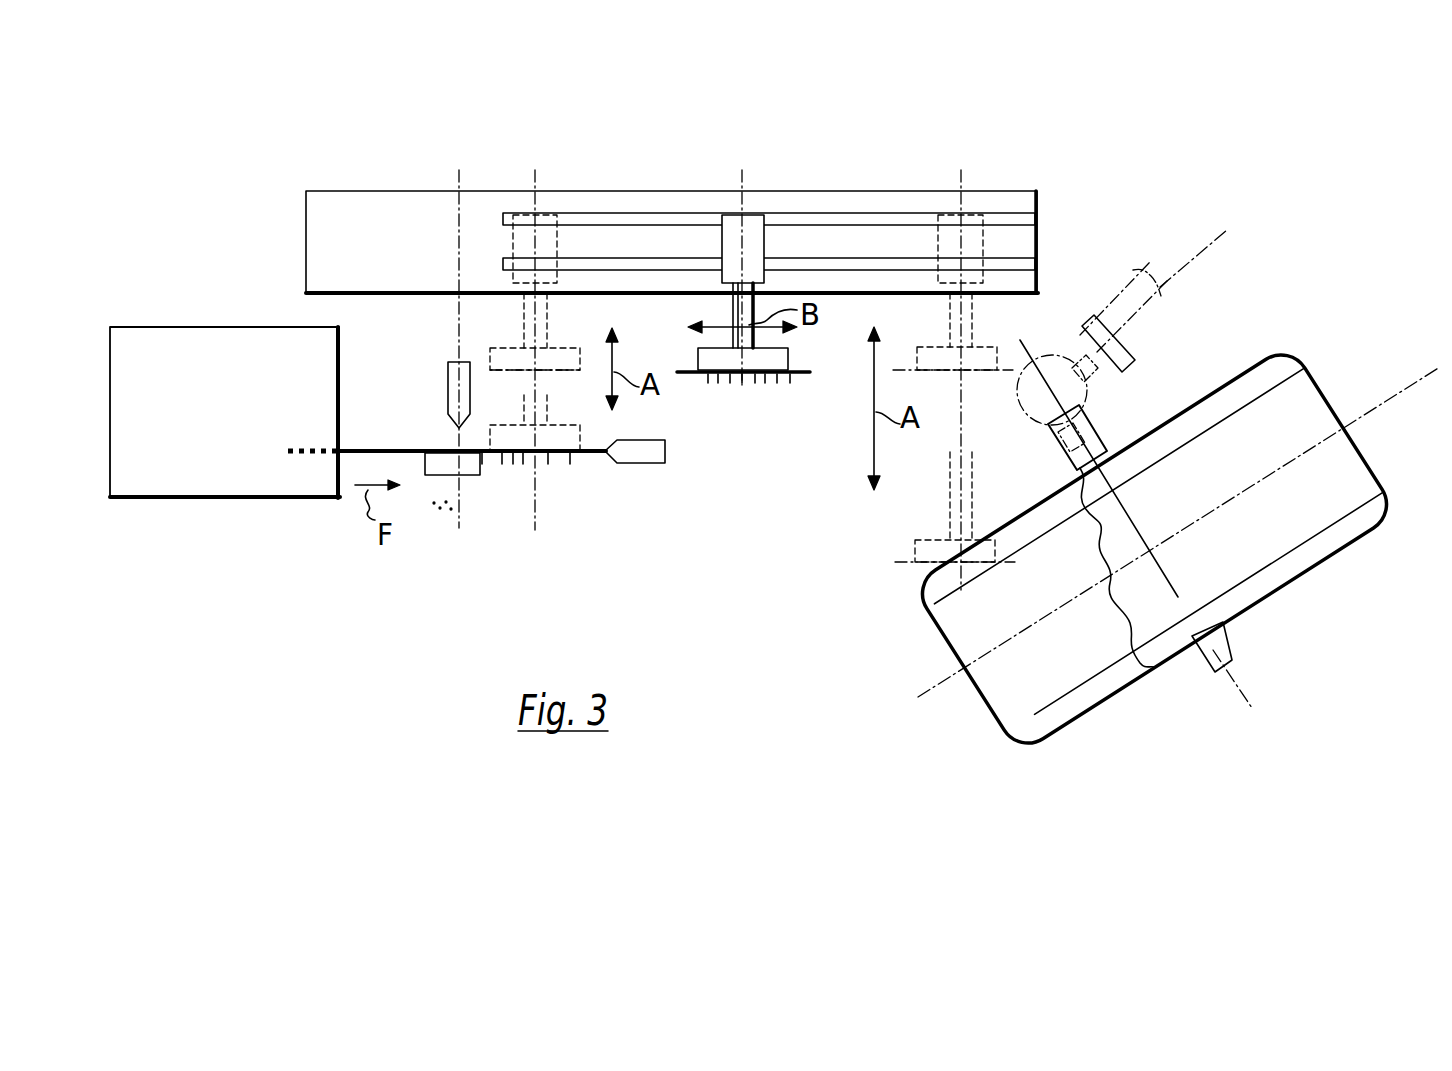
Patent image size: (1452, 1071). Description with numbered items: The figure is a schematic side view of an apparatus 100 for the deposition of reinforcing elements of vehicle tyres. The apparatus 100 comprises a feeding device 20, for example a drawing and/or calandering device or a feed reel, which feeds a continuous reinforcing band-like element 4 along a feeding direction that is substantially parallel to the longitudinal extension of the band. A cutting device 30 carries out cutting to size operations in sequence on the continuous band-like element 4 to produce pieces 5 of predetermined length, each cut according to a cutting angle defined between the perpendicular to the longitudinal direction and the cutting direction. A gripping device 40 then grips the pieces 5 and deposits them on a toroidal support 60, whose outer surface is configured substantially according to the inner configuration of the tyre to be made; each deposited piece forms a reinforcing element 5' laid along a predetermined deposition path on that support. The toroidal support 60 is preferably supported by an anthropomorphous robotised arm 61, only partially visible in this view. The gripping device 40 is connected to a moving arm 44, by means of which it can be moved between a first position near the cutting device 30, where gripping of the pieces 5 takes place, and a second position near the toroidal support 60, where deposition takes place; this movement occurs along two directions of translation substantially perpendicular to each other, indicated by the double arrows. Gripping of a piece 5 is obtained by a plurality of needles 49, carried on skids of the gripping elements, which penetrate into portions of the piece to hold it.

The continuous reinforcing band-like element 4 is at (370, 450).
The piece 5 is at (838, 406).
The reinforcing element 5' is at (946, 539).
The feeding device 20 is at (162, 342).
The cutting device 30 is at (440, 418).
The gripping device 40 is at (558, 350).
The moving arm 44 is at (520, 329).
The needles 49 is at (570, 464).
The toroidal support 60 is at (1262, 354).
The anthropomorphous robotised arm 61 is at (1160, 328).
The apparatus for the deposition of reinforcing elements 100 is at (520, 570).